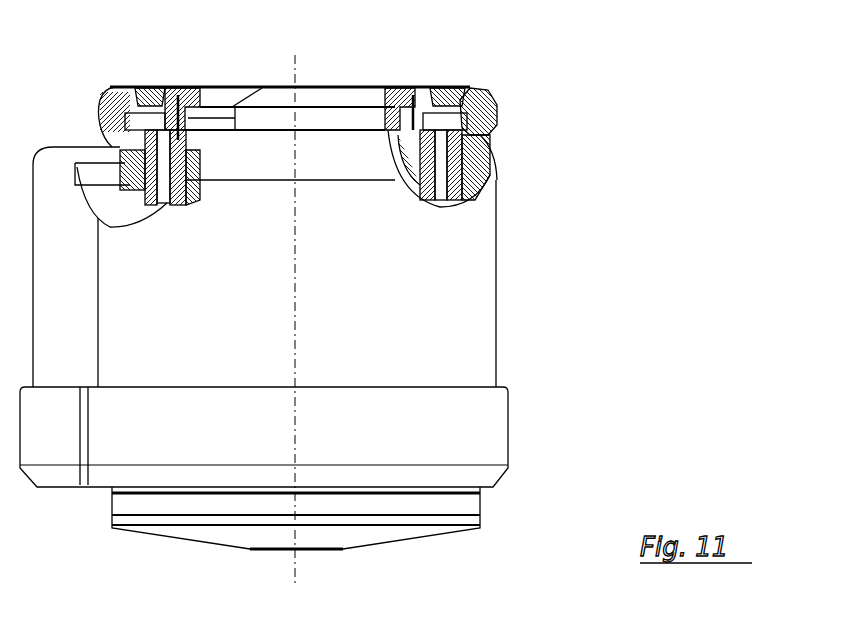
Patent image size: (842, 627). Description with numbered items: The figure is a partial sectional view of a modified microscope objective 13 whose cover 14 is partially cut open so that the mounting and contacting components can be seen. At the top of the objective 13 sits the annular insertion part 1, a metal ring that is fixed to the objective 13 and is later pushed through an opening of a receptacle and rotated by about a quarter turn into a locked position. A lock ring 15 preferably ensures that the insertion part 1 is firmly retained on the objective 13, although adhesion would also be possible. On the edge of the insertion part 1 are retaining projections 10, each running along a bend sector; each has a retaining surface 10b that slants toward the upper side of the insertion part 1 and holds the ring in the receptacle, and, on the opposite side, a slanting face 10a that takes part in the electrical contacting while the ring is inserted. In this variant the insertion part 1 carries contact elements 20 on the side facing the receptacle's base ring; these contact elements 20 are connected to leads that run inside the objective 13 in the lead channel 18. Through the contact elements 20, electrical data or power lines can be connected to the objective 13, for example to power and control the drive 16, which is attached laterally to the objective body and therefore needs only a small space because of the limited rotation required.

The insertion part 1 is at (374, 85).
The retaining projection 10 is at (374, 104).
The slanting face 10a is at (497, 101).
The retaining surface 10b is at (500, 127).
The microscope objective 13 is at (568, 326).
The cover 14 is at (496, 270).
The lock ring 15 is at (409, 90).
The drive 16 is at (60, 478).
The lead channel 18 is at (138, 158).
The contact element 20 is at (148, 84).